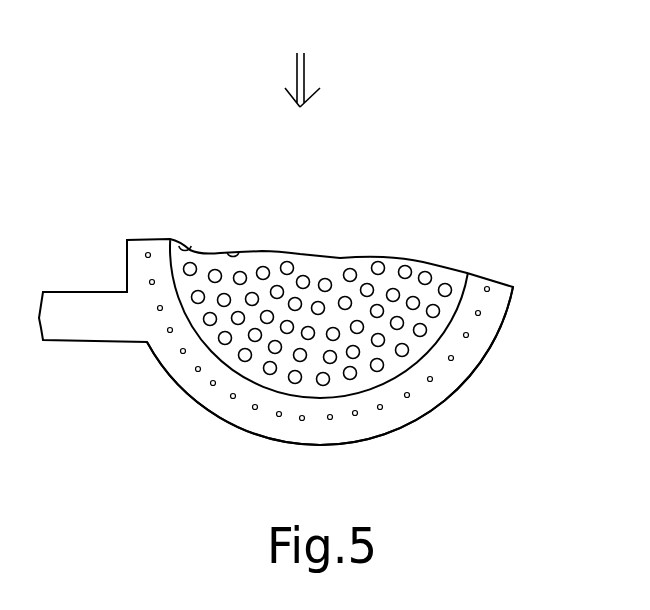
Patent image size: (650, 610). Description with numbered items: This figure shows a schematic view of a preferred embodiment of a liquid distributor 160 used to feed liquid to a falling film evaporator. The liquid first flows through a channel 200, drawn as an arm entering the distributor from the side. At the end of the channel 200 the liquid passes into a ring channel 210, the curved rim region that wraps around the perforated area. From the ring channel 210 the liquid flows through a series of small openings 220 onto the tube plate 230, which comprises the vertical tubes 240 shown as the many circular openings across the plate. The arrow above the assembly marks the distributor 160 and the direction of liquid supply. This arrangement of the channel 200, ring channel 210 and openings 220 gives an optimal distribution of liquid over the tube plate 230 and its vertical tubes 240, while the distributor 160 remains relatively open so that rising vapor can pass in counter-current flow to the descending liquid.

The liquid distributor 160 is at (304, 56).
The channel 200 is at (95, 308).
The ring channel 210 is at (490, 312).
The openings 220 is at (432, 379).
The tube plate 230 is at (248, 268).
The vertical tubes 240 is at (324, 279).